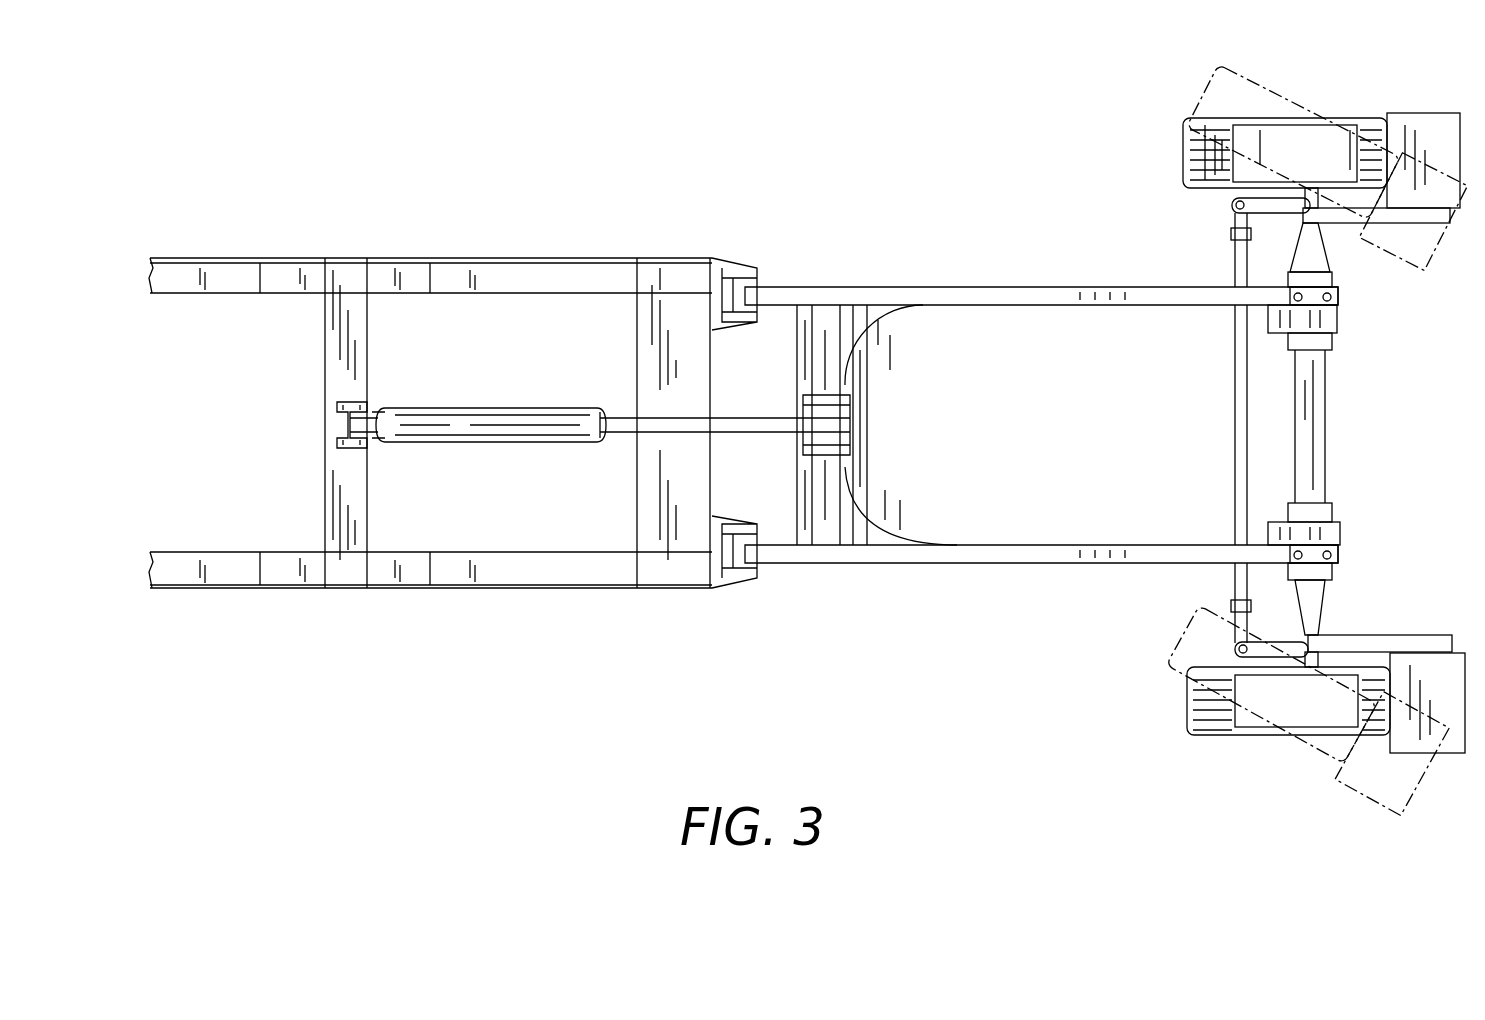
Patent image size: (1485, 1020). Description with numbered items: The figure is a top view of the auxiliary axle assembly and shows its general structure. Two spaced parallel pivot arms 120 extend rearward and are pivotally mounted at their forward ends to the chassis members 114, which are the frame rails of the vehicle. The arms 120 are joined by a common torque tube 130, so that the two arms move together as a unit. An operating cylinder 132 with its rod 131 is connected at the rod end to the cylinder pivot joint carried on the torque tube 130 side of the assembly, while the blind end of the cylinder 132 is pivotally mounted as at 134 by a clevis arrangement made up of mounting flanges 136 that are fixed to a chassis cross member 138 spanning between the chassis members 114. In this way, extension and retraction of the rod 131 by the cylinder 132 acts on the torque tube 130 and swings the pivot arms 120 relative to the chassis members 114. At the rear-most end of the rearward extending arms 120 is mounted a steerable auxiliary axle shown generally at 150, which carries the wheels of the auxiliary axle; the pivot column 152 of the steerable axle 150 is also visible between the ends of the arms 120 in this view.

The chassis member 114 is at (502, 258).
The pivot arm 120 is at (1025, 287).
The torque tube 130 is at (835, 510).
The rod 131 is at (625, 410).
The operating cylinder 132 is at (464, 413).
The pivotal mounting 134 is at (380, 450).
The mounting flange 136 is at (368, 402).
The chassis cross member 138 is at (332, 495).
The steerable auxiliary axle 150 is at (1372, 385).
The pivot column 152 is at (1322, 443).